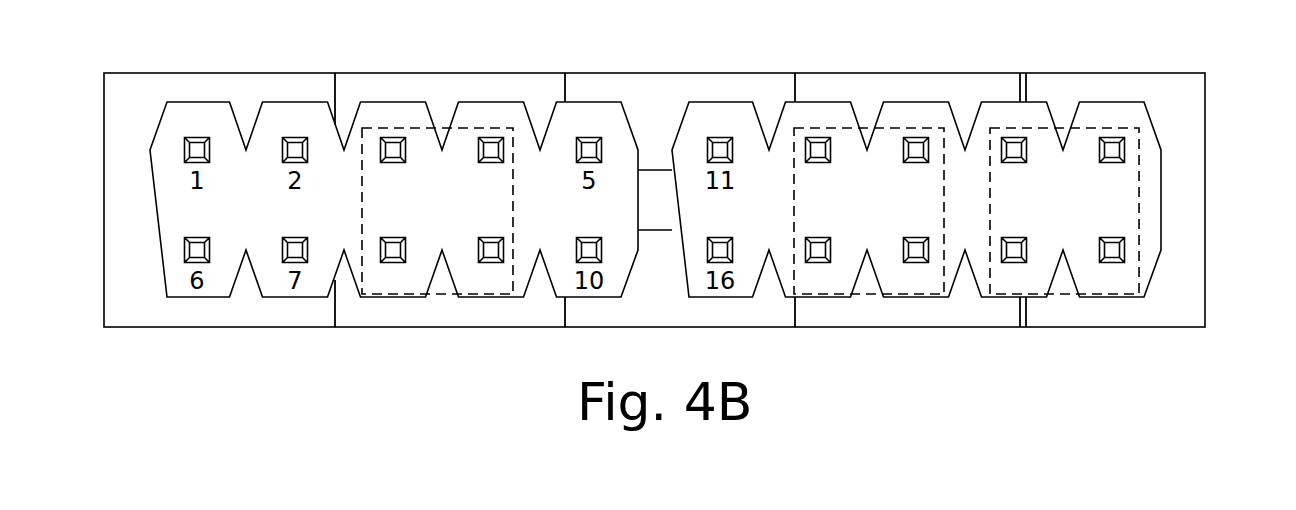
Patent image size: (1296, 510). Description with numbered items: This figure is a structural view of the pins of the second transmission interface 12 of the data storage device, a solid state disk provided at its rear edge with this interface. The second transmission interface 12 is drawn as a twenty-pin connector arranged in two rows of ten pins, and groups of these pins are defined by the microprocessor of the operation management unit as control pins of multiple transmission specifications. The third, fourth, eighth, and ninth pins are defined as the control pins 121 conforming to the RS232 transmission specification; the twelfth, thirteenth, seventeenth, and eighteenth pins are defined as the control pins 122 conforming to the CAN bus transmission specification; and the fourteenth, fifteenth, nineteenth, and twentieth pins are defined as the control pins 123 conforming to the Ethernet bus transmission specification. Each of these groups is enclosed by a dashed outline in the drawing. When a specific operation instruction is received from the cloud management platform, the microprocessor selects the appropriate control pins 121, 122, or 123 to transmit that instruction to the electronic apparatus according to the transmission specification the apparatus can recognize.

The second transmission interface 12 is at (1241, 67).
The control pins 121 is at (392, 150).
The control pins 122 is at (818, 150).
The control pins 123 is at (1014, 150).